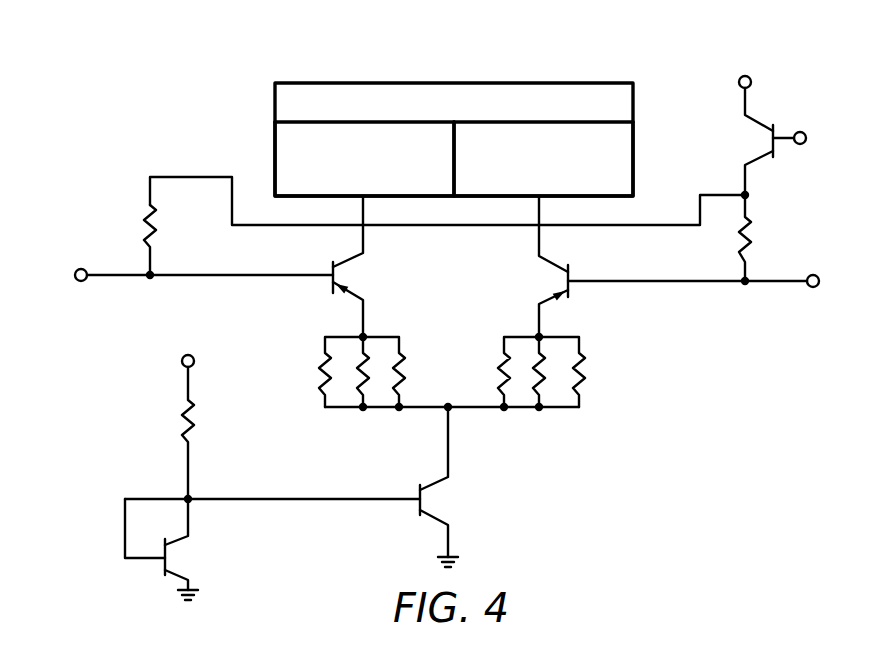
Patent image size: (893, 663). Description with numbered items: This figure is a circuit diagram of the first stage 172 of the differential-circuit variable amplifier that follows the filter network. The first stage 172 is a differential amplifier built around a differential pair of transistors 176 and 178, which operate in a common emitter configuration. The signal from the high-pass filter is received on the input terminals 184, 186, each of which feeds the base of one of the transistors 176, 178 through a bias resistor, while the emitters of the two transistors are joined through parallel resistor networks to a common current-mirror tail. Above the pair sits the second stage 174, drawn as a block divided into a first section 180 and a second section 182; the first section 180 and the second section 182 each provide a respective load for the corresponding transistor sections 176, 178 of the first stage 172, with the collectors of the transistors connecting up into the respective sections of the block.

The first stage 172 is at (446, 311).
The second stage 174 is at (450, 83).
The transistor 176 is at (345, 290).
The transistor 178 is at (557, 297).
The first section 180 is at (283, 155).
The second section 182 is at (622, 155).
The input terminal 184 is at (79, 282).
The input terminal 186 is at (816, 276).